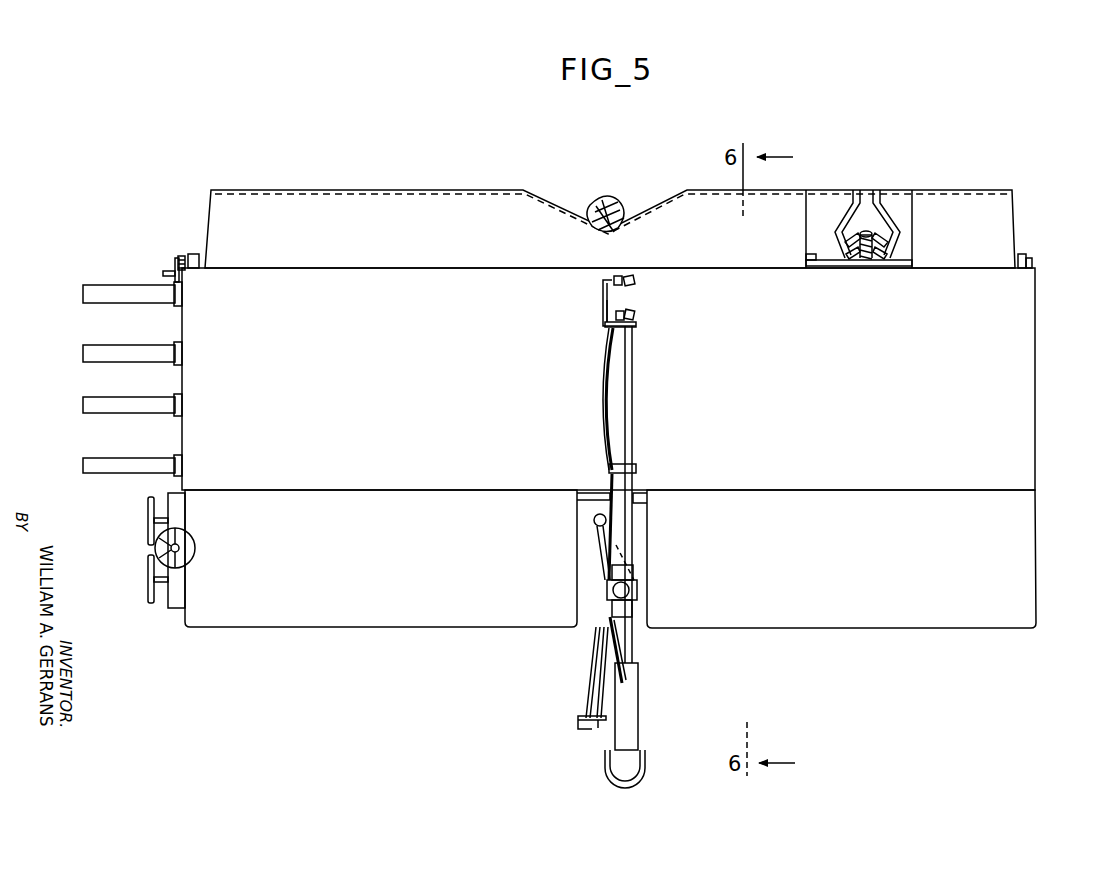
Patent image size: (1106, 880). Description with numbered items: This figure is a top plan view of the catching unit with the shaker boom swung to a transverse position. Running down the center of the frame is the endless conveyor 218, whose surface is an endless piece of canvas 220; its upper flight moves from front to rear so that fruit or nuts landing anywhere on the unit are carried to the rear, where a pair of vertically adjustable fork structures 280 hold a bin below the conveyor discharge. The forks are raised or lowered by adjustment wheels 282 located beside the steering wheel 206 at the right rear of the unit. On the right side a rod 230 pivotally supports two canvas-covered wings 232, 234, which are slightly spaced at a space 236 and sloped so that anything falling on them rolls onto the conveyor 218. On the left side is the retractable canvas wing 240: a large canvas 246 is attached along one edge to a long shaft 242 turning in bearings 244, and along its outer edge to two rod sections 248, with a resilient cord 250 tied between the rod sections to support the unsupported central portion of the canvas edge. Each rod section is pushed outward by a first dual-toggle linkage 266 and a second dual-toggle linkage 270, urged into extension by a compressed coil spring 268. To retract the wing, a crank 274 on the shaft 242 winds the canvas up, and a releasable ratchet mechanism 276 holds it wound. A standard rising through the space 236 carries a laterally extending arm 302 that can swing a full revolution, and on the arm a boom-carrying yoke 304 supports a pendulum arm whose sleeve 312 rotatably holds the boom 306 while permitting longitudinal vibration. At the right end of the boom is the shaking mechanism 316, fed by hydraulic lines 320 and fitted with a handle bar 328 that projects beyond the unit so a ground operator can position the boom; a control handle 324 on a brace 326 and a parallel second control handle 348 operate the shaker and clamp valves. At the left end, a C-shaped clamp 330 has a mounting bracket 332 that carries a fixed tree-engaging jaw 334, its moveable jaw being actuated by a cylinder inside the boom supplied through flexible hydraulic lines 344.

The steering wheel 206 is at (178, 548).
The endless conveyor 218 is at (637, 379).
The endless piece of canvas 220 is at (1050, 385).
The rod 230 is at (637, 492).
The wing 232 is at (389, 558).
The wing 234 is at (834, 559).
The space 236 is at (596, 560).
The retractable canvas wing 240 is at (619, 215).
The shaft 242 is at (820, 262).
The bearings 244 is at (194, 252).
The canvas 246 is at (610, 229).
The rod sections 248 is at (340, 182).
The resilient cord 250 is at (540, 198).
The first dual-toggle linkage 266 is at (895, 251).
The coil spring 268 is at (872, 260).
The second dual-toggle linkage 270 is at (898, 233).
The crank 274 is at (174, 270).
The releasable ratchet mechanism 276 is at (177, 258).
The fork structures 280 is at (90, 405).
The adjustment wheels 282 is at (150, 558).
The laterally extending arm 302 is at (596, 526).
The boom-carrying yoke 304 is at (638, 590).
The boom 306 is at (630, 410).
The sleeve 312 is at (634, 607).
The shaking mechanism 316 is at (642, 698).
The hydraulic lines 320 is at (625, 650).
The control handle 324 is at (592, 680).
The brace 326 is at (580, 718).
The handle bar 328 is at (645, 760).
The C-shaped clamp 330 is at (600, 298).
The mounting bracket 332 is at (606, 310).
The fixed tree-engaging jaw 334 is at (634, 300).
The flexible hydraulic lines 344 is at (610, 403).
The second control handle 348 is at (600, 645).